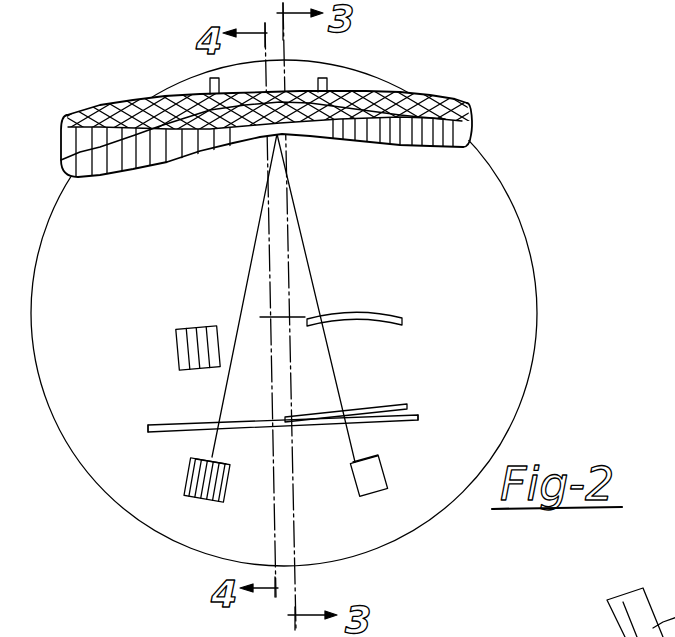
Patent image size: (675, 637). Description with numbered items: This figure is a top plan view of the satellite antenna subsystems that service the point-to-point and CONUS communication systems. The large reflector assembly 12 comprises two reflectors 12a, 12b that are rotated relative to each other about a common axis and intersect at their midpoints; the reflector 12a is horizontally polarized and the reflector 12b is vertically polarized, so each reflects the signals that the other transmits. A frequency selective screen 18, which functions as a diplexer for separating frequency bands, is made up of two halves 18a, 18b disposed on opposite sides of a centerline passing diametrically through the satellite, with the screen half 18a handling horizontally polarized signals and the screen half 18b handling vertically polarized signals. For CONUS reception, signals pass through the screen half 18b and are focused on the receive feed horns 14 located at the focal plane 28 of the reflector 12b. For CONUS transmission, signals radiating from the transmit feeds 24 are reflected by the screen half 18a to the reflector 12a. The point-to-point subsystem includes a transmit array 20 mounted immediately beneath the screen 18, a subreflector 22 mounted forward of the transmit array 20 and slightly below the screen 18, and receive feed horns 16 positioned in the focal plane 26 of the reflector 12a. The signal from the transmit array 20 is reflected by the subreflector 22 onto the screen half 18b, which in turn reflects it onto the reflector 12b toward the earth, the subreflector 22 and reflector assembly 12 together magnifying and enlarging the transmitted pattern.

The reflector assembly 12 is at (301, 107).
The reflector 12a is at (463, 147).
The reflector 12b is at (448, 97).
The receive feed horns 14 is at (372, 489).
The receive feed horns 16 is at (194, 503).
The frequency selective screen 18 is at (399, 436).
The screen half 18a is at (167, 424).
The screen half 18b is at (420, 420).
The transmit array 20 is at (373, 404).
The subreflector 22 is at (390, 327).
The transmit feeds 24 is at (176, 337).
The focal plane 26 is at (213, 462).
The focal plane 28 is at (362, 462).